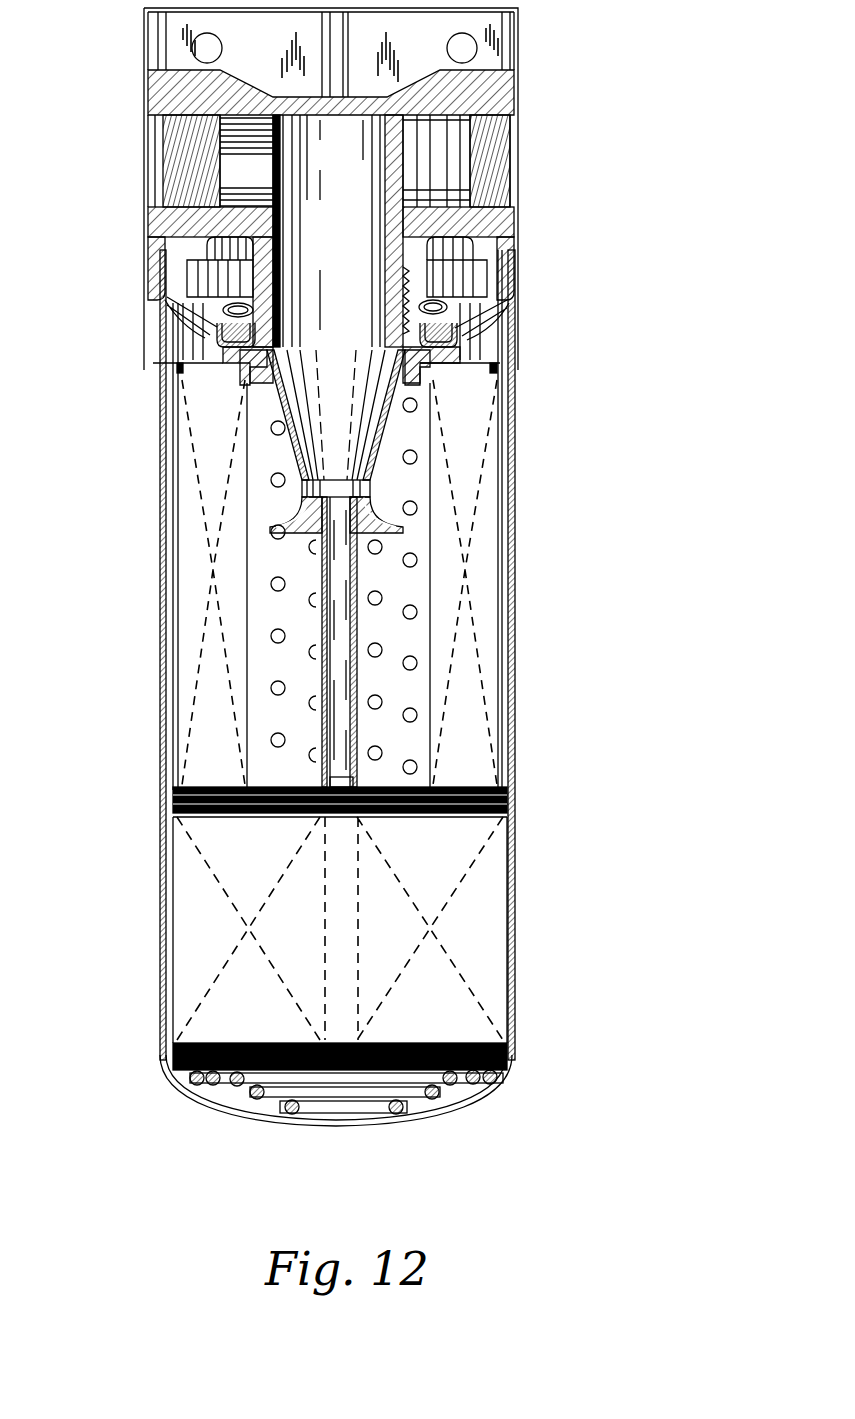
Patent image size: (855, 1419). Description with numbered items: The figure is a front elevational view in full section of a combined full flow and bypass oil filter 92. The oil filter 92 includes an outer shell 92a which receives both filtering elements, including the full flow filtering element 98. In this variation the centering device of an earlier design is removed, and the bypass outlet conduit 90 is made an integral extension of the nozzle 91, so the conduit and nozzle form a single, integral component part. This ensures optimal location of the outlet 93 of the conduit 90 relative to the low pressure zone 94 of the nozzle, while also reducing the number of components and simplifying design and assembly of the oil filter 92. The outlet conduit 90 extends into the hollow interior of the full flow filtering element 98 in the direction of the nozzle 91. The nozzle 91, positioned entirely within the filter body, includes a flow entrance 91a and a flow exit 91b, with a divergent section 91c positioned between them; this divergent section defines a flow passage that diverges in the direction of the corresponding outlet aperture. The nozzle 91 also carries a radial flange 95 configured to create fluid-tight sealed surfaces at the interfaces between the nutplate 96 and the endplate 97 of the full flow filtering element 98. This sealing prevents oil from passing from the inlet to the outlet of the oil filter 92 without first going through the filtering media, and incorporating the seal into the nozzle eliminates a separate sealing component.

The bypass outlet conduit 90 is at (317, 622).
The nozzle 91 is at (285, 452).
The flow entrance 91a is at (378, 547).
The flow exit 91b is at (160, 270).
The divergent section 91c is at (372, 447).
The oil filter 92 is at (645, 510).
The outer shell 92a is at (515, 678).
The outlet 93 is at (338, 494).
The low pressure zone 94 is at (347, 455).
The radial flange 95 is at (223, 368).
The nutplate 96 is at (470, 322).
The endplate 97 is at (478, 350).
The full flow filtering element 98 is at (480, 585).